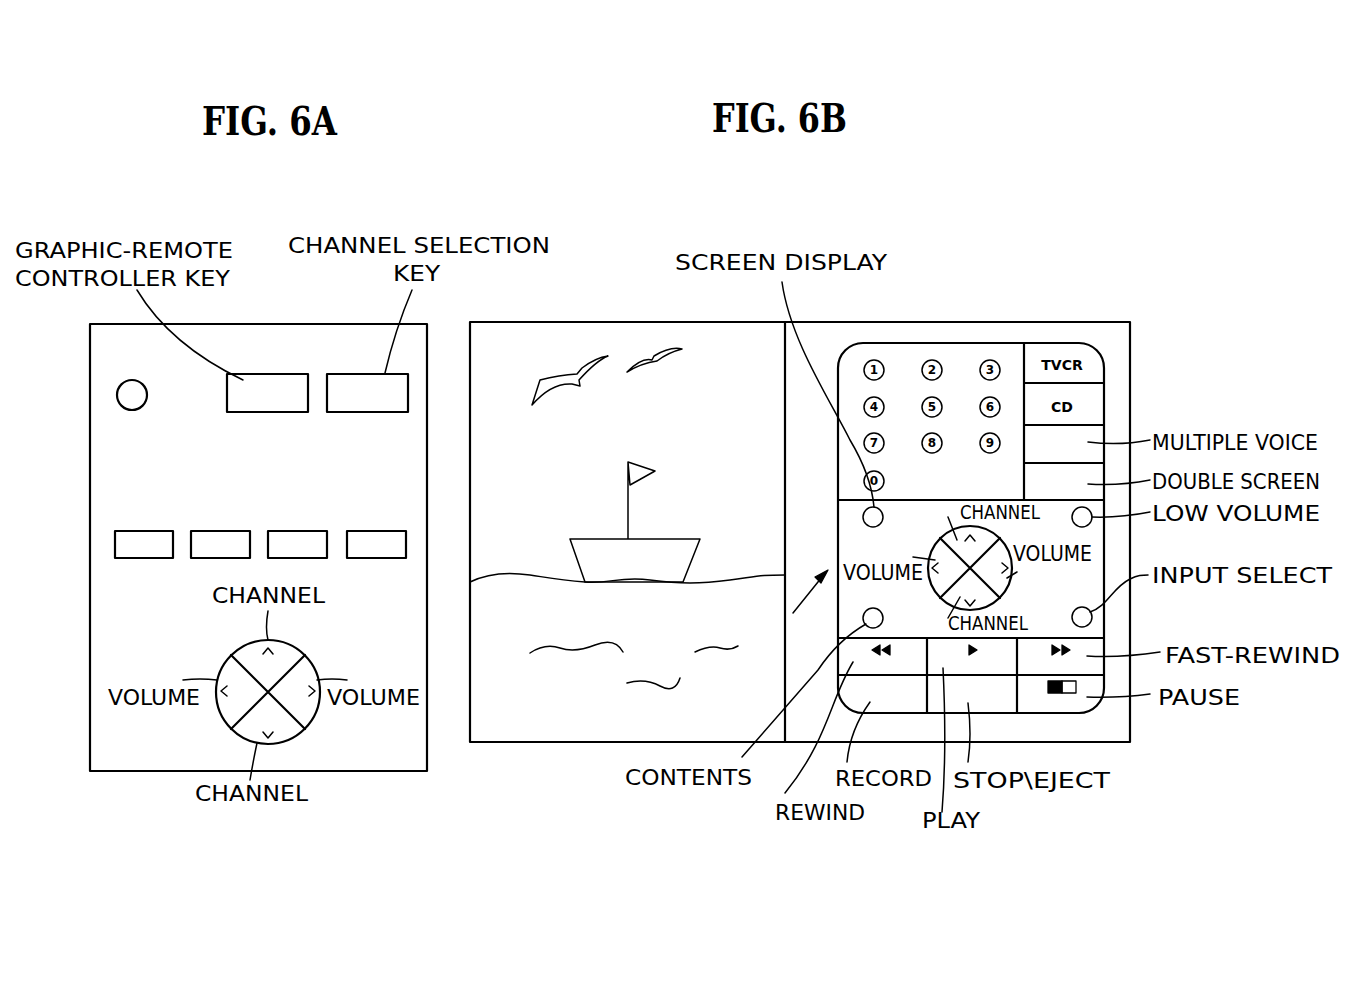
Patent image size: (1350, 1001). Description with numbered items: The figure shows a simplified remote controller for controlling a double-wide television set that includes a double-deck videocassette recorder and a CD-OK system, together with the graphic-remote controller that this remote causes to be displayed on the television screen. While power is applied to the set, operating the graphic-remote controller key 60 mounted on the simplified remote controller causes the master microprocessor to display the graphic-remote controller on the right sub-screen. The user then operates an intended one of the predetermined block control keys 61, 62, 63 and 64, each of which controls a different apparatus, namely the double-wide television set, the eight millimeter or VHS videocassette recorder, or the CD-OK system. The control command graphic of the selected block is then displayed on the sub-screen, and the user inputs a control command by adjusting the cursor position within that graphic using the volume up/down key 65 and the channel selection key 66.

The graphic-remote controller key 60 is at (270, 374).
The channel selection key 66 is at (369, 374).
The block control key 61 is at (147, 531).
The block control key 62 is at (222, 531).
The block control key 63 is at (300, 531).
The block control key 64 is at (379, 531).
The volume up/down key 65 is at (293, 645).